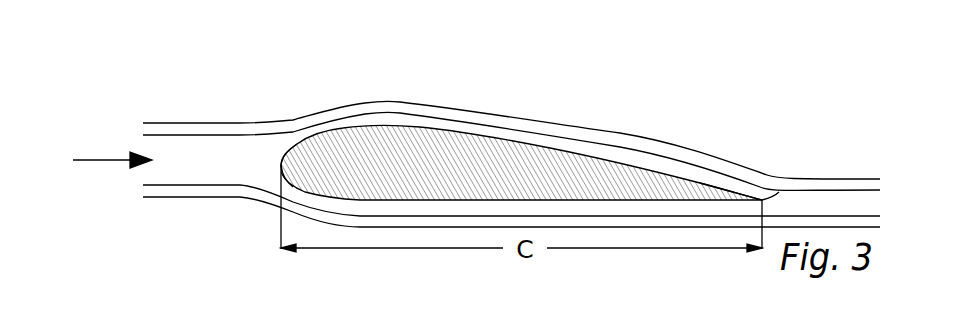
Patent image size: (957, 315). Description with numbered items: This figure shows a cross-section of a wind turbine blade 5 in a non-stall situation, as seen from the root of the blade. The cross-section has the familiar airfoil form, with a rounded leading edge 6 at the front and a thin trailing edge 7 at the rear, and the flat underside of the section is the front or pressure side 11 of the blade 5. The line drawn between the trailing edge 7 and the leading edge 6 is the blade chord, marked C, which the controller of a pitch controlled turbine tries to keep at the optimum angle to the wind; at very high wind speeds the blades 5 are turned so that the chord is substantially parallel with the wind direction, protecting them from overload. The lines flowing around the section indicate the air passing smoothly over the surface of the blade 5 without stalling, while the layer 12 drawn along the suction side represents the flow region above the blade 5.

The wind turbine blade 5 is at (397, 150).
The leading edge 6 is at (285, 150).
The trailing edge 7 is at (785, 178).
The pressure side 11 is at (450, 200).
The upper boundary layer 12 is at (500, 133).